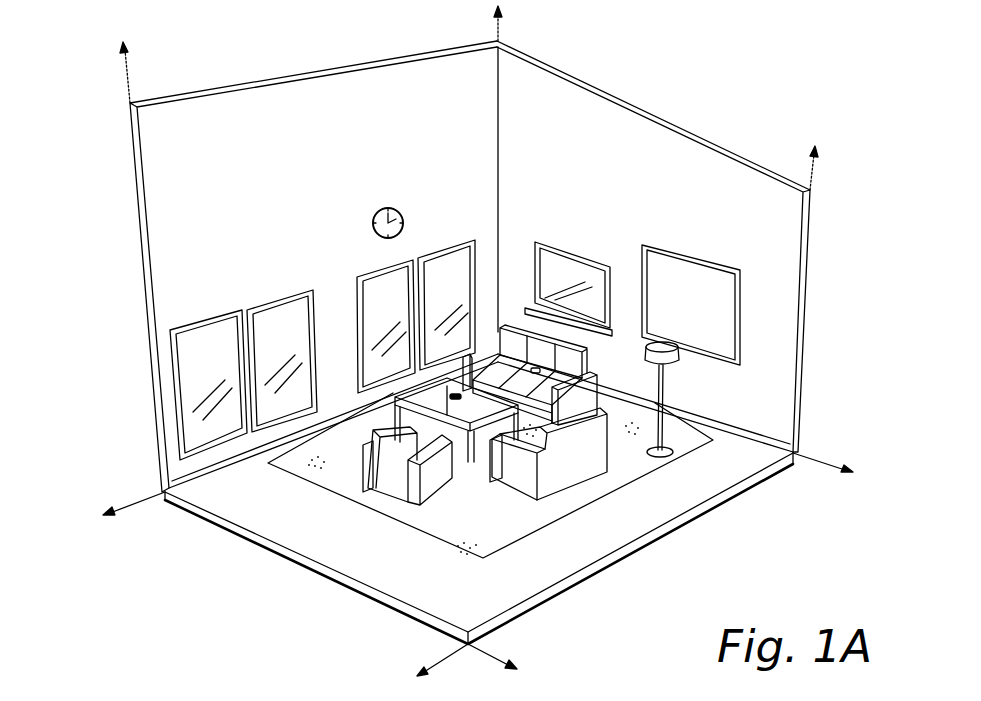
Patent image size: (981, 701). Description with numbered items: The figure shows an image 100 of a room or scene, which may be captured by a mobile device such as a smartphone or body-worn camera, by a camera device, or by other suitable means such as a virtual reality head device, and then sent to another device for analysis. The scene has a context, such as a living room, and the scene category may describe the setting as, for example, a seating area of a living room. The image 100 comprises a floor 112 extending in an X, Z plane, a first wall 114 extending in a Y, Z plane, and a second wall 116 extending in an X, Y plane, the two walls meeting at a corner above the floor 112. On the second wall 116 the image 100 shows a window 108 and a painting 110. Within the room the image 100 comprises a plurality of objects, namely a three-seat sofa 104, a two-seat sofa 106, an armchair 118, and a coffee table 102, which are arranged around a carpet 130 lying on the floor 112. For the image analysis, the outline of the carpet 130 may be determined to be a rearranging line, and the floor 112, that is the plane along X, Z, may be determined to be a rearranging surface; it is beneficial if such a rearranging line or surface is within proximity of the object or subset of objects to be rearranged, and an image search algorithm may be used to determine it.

The image 100 is at (722, 92).
The coffee table 102 is at (425, 392).
The three-seat sofa 104 is at (537, 368).
The two-seat sofa 106 is at (568, 440).
The window 108 is at (190, 360).
The painting 110 is at (700, 284).
The floor 112 is at (288, 523).
The first wall 114 is at (165, 153).
The second wall 116 is at (547, 103).
The armchair 118 is at (390, 465).
The carpet 130 is at (683, 440).